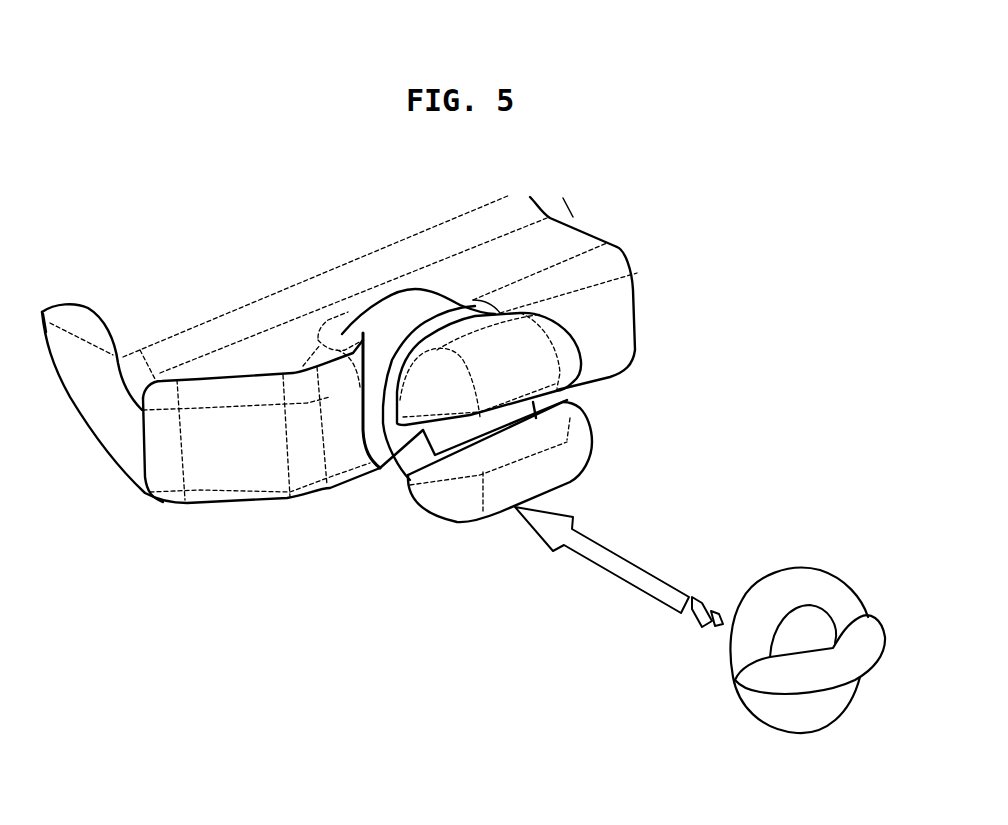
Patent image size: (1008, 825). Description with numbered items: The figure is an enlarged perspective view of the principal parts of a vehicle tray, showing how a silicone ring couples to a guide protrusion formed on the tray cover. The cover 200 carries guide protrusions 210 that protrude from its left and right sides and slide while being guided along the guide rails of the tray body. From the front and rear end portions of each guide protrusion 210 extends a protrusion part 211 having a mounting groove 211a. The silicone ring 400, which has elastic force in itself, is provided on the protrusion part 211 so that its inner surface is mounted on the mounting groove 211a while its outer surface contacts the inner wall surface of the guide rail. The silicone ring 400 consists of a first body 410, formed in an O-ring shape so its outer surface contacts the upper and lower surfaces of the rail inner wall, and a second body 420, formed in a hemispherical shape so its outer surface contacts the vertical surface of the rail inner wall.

The cover 200 is at (312, 292).
The guide protrusion 210 is at (606, 303).
The protrusion part 211 is at (450, 503).
The mounting groove 211a is at (380, 467).
The silicone ring 400 is at (777, 604).
The first body 410 is at (823, 585).
The second body 420 is at (780, 685).